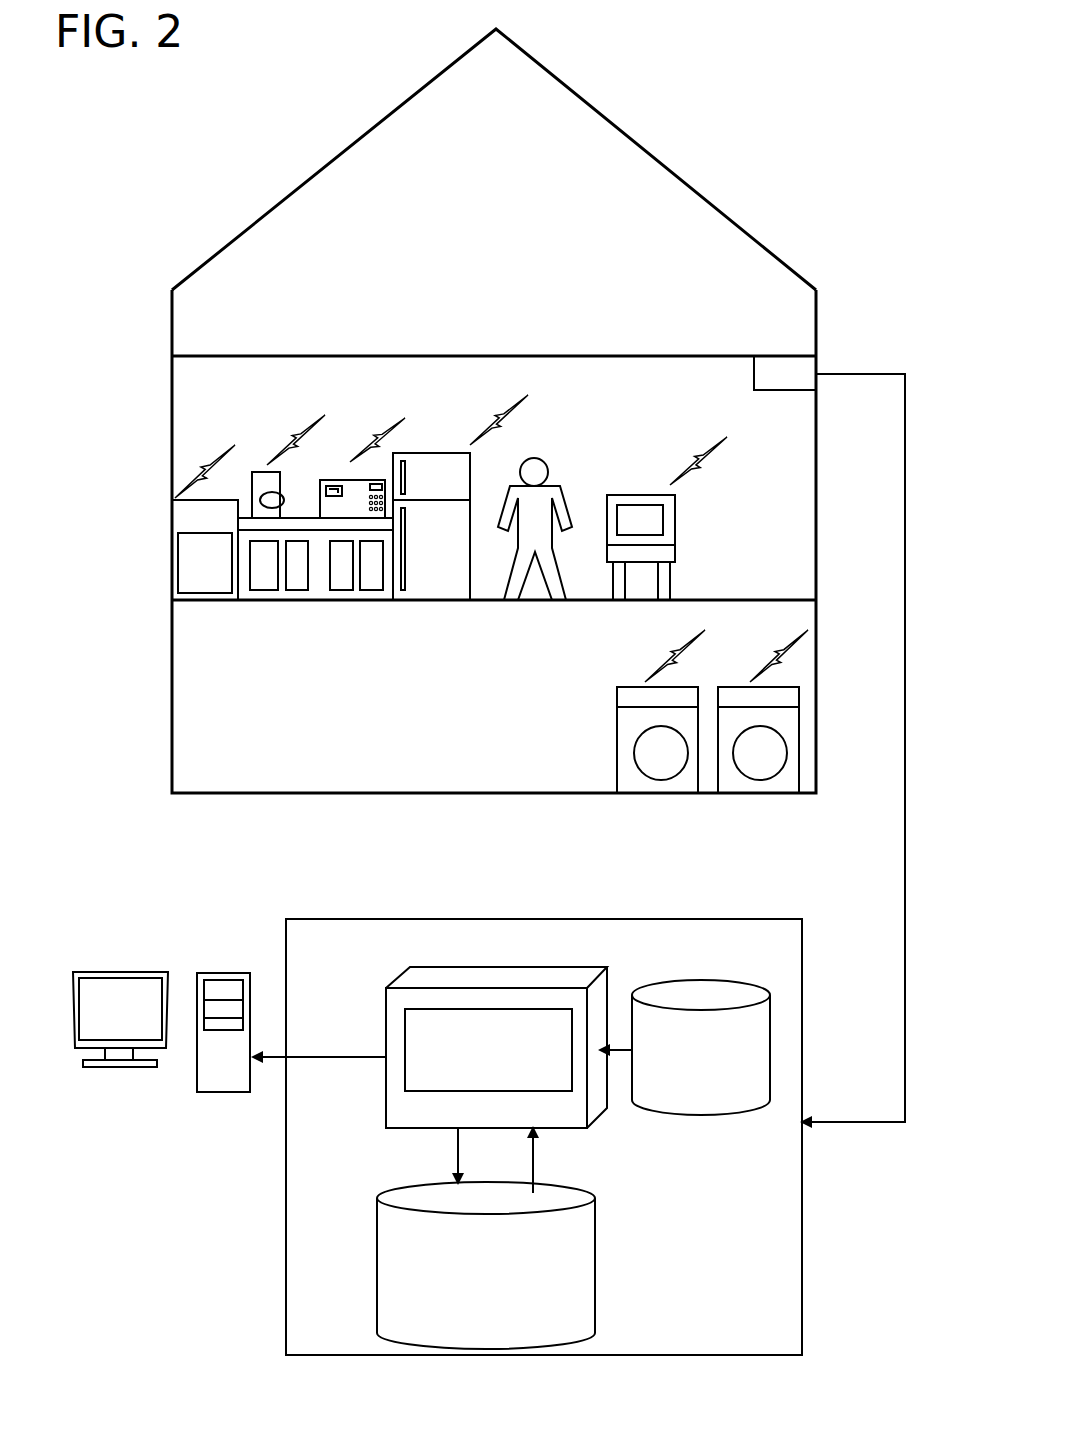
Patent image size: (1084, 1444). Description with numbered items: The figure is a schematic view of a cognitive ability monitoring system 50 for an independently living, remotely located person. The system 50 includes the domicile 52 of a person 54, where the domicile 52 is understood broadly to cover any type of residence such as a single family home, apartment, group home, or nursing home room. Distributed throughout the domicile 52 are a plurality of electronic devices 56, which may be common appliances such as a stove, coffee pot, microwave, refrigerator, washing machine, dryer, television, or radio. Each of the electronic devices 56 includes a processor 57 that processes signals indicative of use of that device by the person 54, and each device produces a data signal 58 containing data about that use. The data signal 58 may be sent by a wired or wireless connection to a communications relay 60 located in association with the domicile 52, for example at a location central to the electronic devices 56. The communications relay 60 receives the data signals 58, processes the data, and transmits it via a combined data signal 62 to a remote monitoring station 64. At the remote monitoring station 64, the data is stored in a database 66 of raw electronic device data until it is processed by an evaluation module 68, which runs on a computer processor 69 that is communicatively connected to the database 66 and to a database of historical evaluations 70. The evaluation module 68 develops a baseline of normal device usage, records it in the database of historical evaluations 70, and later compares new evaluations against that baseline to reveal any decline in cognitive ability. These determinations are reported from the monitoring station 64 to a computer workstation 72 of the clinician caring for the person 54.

The cognitive ability monitoring system 50 is at (735, 128).
The domicile 52 is at (748, 231).
The person 54 is at (562, 491).
The electronic devices 56 is at (262, 472).
The processor 57 is at (325, 484).
The data signal 58 is at (198, 470).
The communications relay 60 is at (806, 370).
The combined data signal 62 is at (907, 768).
The remote monitoring station 64 is at (703, 919).
The database of raw electronic device data 66 is at (680, 1115).
The evaluation module 68 is at (410, 1067).
The computer processor 69 is at (477, 995).
The database of historical evaluations 70 is at (595, 1265).
The computer workstation 72 is at (122, 972).